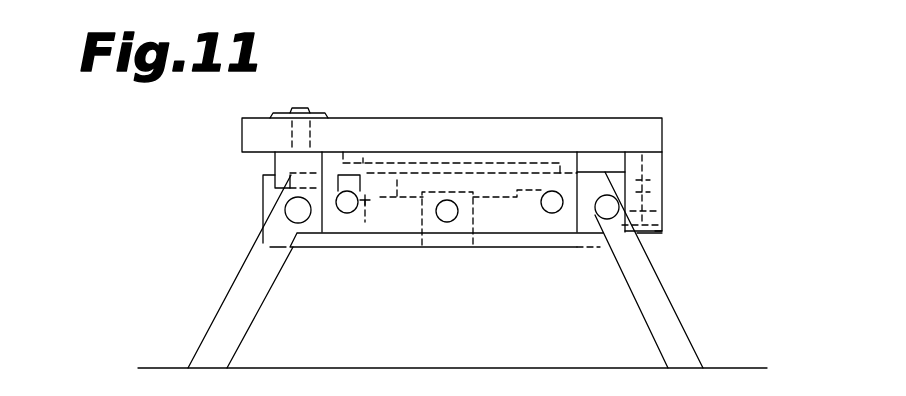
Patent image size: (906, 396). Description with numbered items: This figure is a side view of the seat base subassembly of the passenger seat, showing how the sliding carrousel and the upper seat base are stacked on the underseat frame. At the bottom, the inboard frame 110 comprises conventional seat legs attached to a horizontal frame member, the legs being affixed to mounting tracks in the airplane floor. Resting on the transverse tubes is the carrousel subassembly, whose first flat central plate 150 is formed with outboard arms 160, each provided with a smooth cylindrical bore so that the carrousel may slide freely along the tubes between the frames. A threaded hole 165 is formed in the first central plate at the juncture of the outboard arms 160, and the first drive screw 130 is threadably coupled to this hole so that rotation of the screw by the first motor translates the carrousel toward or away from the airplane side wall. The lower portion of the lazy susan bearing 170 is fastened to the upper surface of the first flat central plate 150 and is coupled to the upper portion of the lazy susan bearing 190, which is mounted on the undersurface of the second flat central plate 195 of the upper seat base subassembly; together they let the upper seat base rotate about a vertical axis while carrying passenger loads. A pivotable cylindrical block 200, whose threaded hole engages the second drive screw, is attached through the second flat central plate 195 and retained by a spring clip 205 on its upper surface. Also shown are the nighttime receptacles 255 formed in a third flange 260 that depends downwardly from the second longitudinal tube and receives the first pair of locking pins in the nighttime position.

The inboard frame 110 is at (216, 317).
The first drive screw 130 is at (442, 224).
The first flat central plate 150 is at (568, 249).
The outboard arms 160 is at (258, 213).
The threaded hole 165 is at (459, 223).
The lower portion of lazy susan bearing 170 is at (545, 162).
The upper portion of lazy susan bearing 190 is at (471, 157).
The second flat central plate 195 is at (647, 135).
The pivotable cylindrical block 200 is at (267, 167).
The spring clip 205 is at (323, 106).
The nighttime receptacles 255 is at (664, 202).
The third flange 260 is at (665, 235).